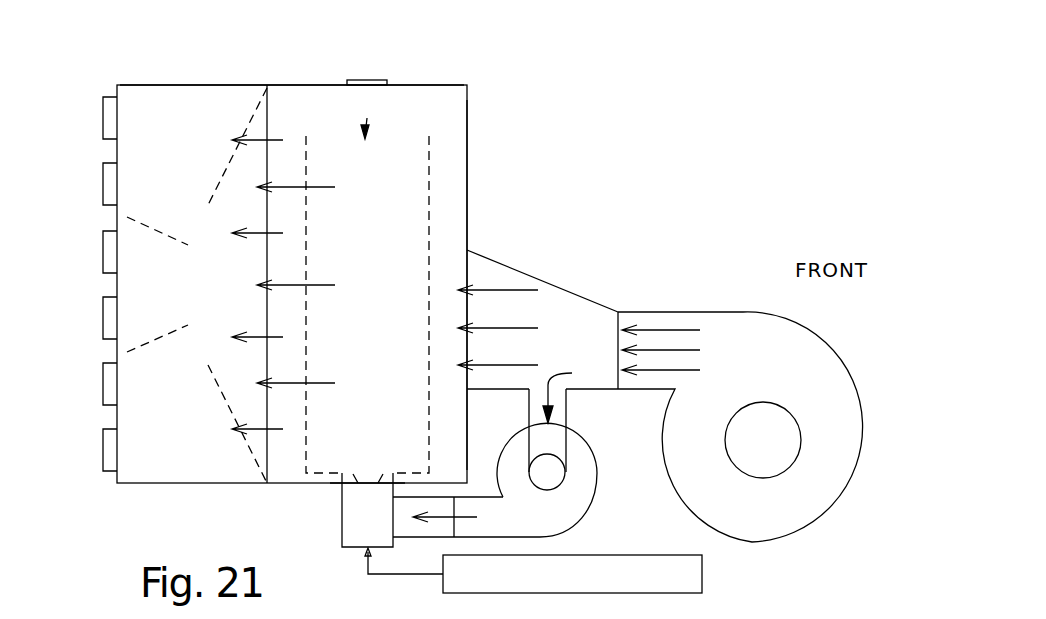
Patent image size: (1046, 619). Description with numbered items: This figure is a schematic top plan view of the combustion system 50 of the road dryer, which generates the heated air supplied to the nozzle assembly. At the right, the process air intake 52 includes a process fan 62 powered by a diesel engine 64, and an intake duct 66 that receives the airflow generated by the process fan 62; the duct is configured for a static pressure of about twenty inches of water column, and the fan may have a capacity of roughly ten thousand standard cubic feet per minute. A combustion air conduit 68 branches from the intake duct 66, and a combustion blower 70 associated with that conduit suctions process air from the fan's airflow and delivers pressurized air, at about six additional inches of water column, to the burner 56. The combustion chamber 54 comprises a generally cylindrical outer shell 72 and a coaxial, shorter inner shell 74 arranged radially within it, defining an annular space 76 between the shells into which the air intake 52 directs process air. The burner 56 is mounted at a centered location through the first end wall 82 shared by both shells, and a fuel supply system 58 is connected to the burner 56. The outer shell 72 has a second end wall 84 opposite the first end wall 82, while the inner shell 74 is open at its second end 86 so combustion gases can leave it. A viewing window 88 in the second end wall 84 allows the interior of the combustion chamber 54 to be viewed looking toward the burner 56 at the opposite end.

The combustion system 50 is at (591, 130).
The process air intake 52 is at (619, 312).
The combustion chamber 54 is at (469, 119).
The burner 56 is at (340, 520).
The fuel supply system 58 is at (610, 554).
The process fan 62 is at (770, 376).
The diesel engine 64 is at (770, 449).
The intake duct 66 is at (568, 319).
The combustion air conduit 68 is at (567, 410).
The combustion blower 70 is at (599, 484).
The outer shell 72 is at (468, 178).
The inner shell 74 is at (429, 225).
The annular space 76 is at (447, 410).
The first end wall 82 is at (330, 485).
The second end wall 84 is at (417, 85).
The second end 86 is at (367, 118).
The viewing window 88 is at (353, 81).